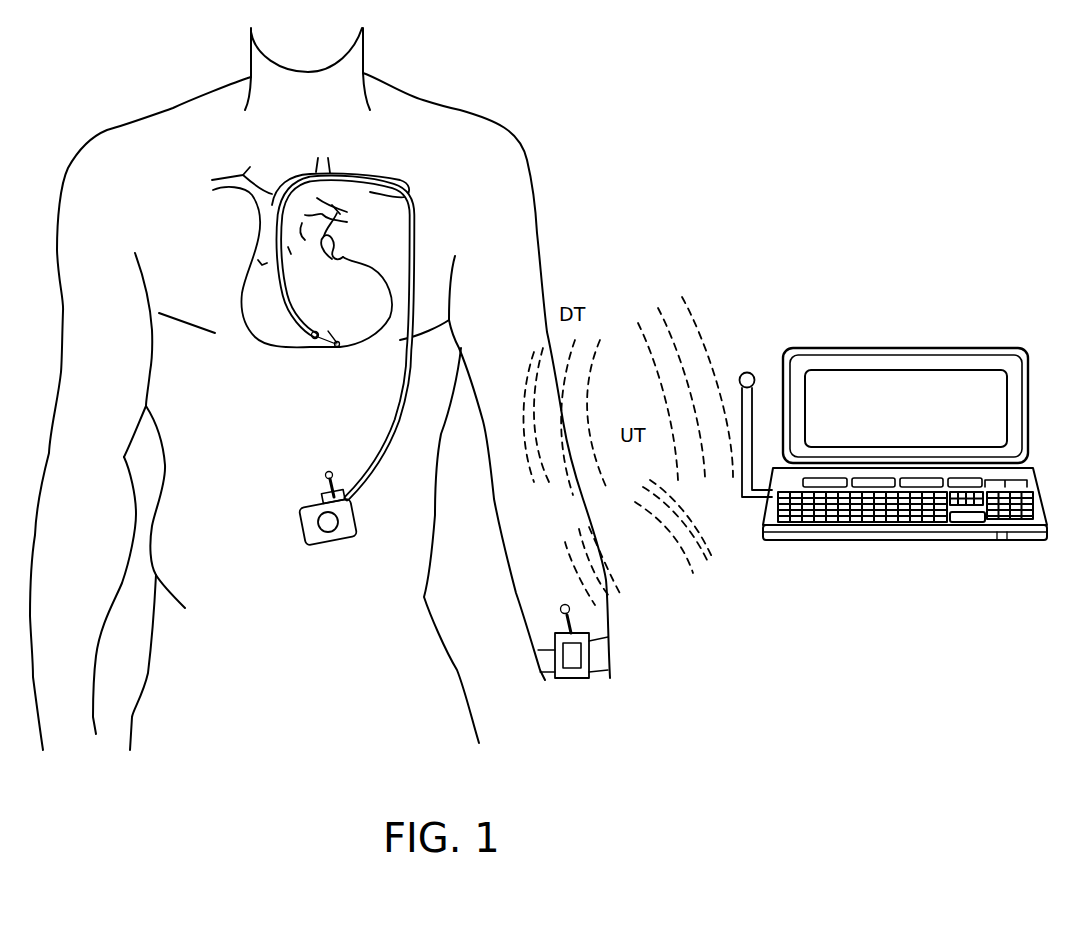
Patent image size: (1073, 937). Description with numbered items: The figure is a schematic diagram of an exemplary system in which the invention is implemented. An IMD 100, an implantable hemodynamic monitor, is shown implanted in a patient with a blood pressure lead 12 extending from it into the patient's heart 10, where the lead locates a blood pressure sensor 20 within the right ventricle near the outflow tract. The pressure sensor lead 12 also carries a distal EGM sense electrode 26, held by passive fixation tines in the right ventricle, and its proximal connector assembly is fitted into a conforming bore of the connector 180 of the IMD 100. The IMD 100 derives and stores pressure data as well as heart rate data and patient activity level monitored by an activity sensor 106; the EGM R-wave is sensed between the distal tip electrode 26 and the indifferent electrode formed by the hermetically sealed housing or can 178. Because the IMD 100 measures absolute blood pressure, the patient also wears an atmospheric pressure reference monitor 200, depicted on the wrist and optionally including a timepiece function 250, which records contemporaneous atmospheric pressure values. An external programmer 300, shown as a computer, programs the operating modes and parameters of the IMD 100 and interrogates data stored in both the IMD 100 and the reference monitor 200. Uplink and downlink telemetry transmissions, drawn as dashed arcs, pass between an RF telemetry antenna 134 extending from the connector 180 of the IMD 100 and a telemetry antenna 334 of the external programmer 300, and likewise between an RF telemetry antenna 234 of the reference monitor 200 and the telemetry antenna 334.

The heart 10 is at (242, 283).
The blood pressure lead 12 is at (398, 411).
The blood pressure sensor 20 is at (312, 339).
The distal EGM sense electrode 26 is at (338, 348).
The IMD 100 is at (345, 512).
The activity sensor 106 is at (335, 534).
The RF telemetry antenna 134 is at (326, 474).
The hermetically sealed housing or can 178 is at (352, 522).
The connector 180 is at (345, 497).
The atmospheric pressure reference monitor 200 is at (608, 660).
The RF telemetry antenna 234 is at (578, 613).
The timepiece function 250 is at (578, 655).
The external programmer 300 is at (972, 360).
The telemetry antenna 334 is at (748, 372).